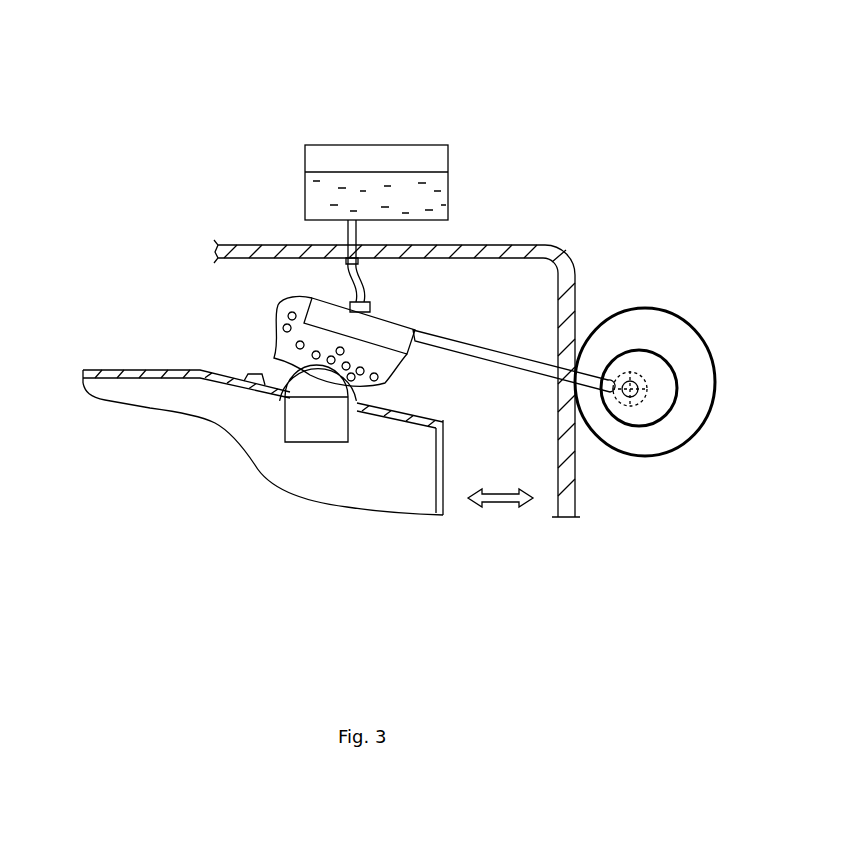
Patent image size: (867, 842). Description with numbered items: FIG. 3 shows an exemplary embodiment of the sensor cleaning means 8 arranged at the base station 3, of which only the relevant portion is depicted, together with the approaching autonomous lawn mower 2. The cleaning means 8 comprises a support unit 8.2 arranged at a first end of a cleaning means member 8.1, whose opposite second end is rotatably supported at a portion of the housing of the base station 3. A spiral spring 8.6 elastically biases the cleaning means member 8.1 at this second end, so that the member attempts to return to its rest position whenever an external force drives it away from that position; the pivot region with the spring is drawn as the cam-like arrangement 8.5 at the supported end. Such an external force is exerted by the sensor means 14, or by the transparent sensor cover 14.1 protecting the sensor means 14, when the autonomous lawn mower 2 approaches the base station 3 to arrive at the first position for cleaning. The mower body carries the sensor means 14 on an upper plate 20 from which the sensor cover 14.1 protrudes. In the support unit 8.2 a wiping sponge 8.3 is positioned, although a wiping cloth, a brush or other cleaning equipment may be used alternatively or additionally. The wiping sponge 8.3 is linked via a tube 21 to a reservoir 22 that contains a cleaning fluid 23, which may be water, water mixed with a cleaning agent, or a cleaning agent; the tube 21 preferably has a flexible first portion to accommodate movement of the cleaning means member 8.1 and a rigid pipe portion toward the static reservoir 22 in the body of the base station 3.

The base station 3 is at (614, 86).
The autonomous lawn mower 2 is at (364, 529).
The sensor cleaning means 8 is at (505, 318).
The cleaning means member 8.1 is at (490, 370).
The support unit 8.2 is at (411, 353).
The wiping sponge 8.3 is at (288, 302).
The inner cam disc 8.5 is at (671, 355).
The spiral spring 8.6 is at (699, 448).
The sensor means 14 is at (286, 442).
The transparent sensor cover 14.1 is at (258, 372).
The cover plate 20 is at (137, 370).
The tube 21 is at (364, 284).
The reservoir 22 is at (366, 145).
The cleaning fluid 23 is at (448, 196).